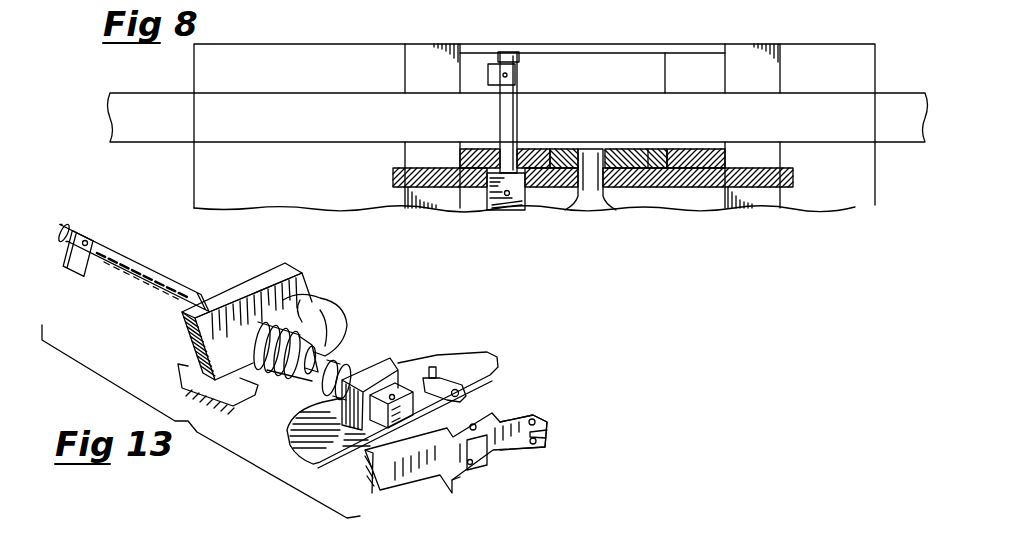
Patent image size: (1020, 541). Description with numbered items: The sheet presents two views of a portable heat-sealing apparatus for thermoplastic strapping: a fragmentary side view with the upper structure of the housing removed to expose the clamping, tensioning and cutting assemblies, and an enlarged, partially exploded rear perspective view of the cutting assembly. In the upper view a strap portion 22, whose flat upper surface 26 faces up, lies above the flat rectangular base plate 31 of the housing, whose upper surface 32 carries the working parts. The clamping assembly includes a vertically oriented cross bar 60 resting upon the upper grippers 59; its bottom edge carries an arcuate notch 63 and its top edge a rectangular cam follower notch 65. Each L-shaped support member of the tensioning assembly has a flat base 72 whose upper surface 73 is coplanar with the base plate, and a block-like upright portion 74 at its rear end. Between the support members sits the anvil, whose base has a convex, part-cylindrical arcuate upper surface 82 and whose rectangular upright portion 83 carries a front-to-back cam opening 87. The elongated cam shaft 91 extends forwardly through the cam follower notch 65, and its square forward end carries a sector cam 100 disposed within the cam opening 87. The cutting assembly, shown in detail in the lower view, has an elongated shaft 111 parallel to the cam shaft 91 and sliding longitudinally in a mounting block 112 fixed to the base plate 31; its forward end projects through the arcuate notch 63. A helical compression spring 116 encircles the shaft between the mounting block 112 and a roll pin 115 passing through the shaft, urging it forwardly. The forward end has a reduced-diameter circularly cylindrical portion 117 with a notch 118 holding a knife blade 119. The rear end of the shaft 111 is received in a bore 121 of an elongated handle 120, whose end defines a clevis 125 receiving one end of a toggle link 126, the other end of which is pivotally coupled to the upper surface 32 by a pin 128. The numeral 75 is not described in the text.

In FIG. 8, the strap portion 22 is at (150, 92).
In FIG. 8, the upper surface 26 is at (172, 128).
In FIG. 8, the base plate 31 is at (289, 207).
In FIG. 13, the base plate 31 is at (480, 357).
In FIG. 8, the upper surface 32 is at (334, 179).
In FIG. 8, the upper grippers 59 is at (418, 210).
In FIG. 8, the cross bar 60 is at (743, 190).
In FIG. 13, the cross bar 60 is at (298, 278).
In FIG. 13, the arcuate notch 63 is at (246, 403).
In FIG. 8, the cam follower notch 65 is at (603, 200).
In FIG. 8, the base 72 is at (439, 45).
In FIG. 8, the upper surface 73 is at (712, 81).
In FIG. 8, the upright portion 74 is at (460, 158).
In FIG. 8, the notch 75 is at (654, 148).
In FIG. 8, the arcuate upper surface 82 is at (630, 81).
In FIG. 8, the upright portion 83 is at (637, 148).
In FIG. 8, the cam opening 87 is at (619, 148).
In FIG. 8, the cam shaft 91 is at (587, 200).
In FIG. 8, the sector cam 100 is at (565, 148).
In FIG. 8, the shaft 111 is at (490, 193).
In FIG. 13, the shaft 111 is at (400, 390).
In FIG. 13, the mounting block 112 is at (375, 360).
In FIG. 8, the roll pin 115 is at (513, 211).
In FIG. 13, the roll pin 115 is at (300, 310).
In FIG. 13, the helical compression spring 116 is at (292, 389).
In FIG. 8, the circularly cylindrical portion 117 is at (500, 112).
In FIG. 13, the circularly cylindrical portion 117 is at (135, 260).
In FIG. 13, the notch 118 is at (81, 223).
In FIG. 8, the knife blade 119 is at (488, 75).
In FIG. 13, the knife blade 119 is at (66, 277).
In FIG. 13, the handle 120 is at (380, 470).
In FIG. 13, the bore 121 is at (476, 465).
In FIG. 13, the clevis 125 is at (548, 441).
In FIG. 13, the toggle link 126 is at (467, 396).
In FIG. 13, the pin 128 is at (434, 368).